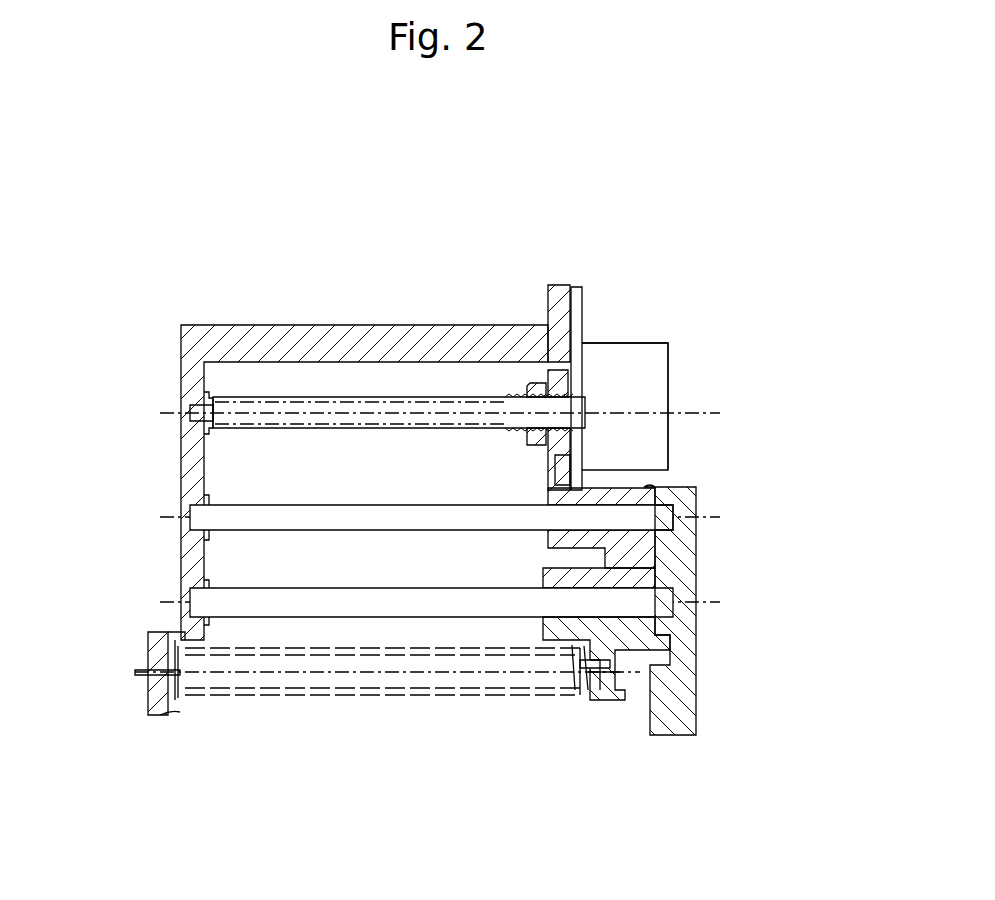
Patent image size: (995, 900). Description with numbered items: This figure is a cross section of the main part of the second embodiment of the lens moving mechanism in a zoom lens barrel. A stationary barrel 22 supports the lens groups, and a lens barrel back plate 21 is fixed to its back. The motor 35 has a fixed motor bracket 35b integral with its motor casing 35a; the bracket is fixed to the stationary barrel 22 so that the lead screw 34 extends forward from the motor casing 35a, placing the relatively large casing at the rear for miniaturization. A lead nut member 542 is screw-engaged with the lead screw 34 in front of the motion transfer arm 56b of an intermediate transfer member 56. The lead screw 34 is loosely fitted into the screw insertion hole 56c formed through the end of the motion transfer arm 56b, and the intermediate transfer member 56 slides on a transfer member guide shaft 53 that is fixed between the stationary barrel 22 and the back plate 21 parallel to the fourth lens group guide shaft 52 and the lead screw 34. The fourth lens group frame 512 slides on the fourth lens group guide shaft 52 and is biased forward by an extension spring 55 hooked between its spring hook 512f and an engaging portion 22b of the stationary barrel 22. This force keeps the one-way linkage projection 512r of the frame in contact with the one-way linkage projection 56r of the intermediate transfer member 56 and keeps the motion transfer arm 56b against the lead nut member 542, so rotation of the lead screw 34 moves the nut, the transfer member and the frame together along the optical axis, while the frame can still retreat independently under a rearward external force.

The lens barrel back plate 21 is at (672, 712).
The stationary barrel 22 is at (415, 335).
The engaging portion 22b is at (152, 690).
The lead screw 34 is at (338, 405).
The motor 35 is at (644, 279).
The motor casing 35a is at (638, 352).
The fixed motor bracket 35b is at (575, 290).
The fourth lens group guide shaft 52 is at (230, 597).
The transfer member guide shaft 53 is at (230, 505).
The extension spring 55 is at (563, 680).
The intermediate transfer member 56 is at (628, 495).
The motion transfer arm 56b is at (563, 463).
The screw insertion hole 56c is at (570, 402).
The one-way linkage projection 56r is at (620, 583).
The fourth lens group frame 512 is at (650, 633).
The spring hook 512f is at (598, 700).
The one-way linkage projection 512r is at (655, 525).
The lead nut member 542 is at (528, 385).